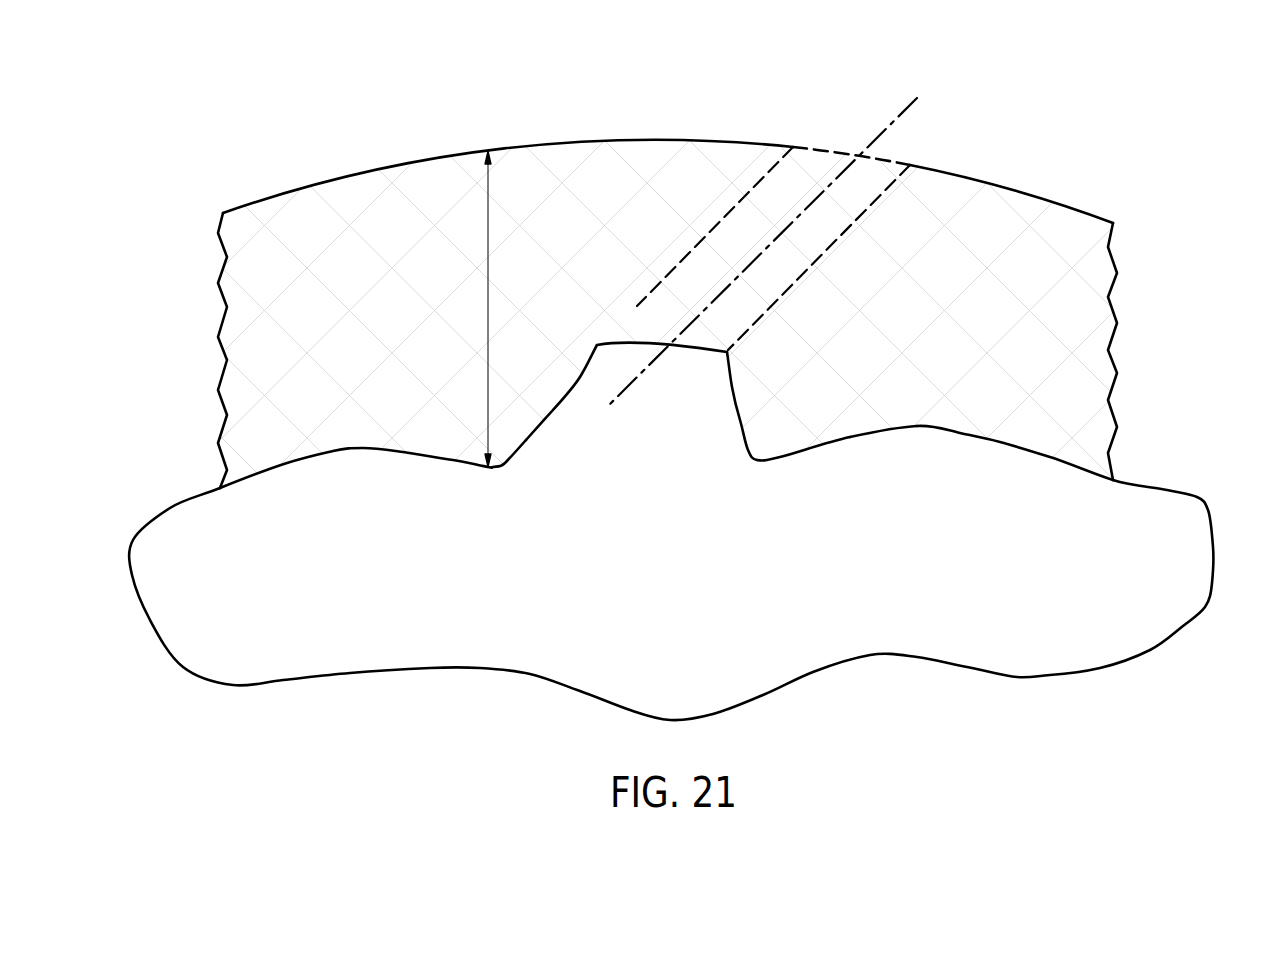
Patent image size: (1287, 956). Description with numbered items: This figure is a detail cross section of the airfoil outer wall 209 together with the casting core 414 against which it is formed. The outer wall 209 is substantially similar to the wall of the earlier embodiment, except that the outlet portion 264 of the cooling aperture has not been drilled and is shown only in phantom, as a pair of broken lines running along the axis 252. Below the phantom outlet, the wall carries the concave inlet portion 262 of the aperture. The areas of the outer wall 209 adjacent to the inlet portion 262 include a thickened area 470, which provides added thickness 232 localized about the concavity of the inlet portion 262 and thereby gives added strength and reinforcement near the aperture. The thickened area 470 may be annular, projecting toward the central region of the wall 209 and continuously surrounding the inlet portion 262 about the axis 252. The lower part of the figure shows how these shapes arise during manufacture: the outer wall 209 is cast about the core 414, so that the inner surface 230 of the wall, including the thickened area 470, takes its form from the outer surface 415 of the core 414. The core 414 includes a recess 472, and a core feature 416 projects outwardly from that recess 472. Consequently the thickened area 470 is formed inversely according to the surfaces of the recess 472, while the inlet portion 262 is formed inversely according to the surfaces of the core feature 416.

The outer wall 209 is at (1097, 263).
The added thickness 232 is at (487, 252).
The axis 252 is at (895, 118).
The outlet portion 264 is at (905, 172).
The core feature 416 is at (630, 365).
The inlet portion 262 is at (672, 366).
The thickened area 470 is at (803, 452).
The recess 472 is at (779, 453).
The inner surface 230 is at (965, 438).
The outer surface of the core 415 is at (330, 451).
The core 414 is at (1179, 610).